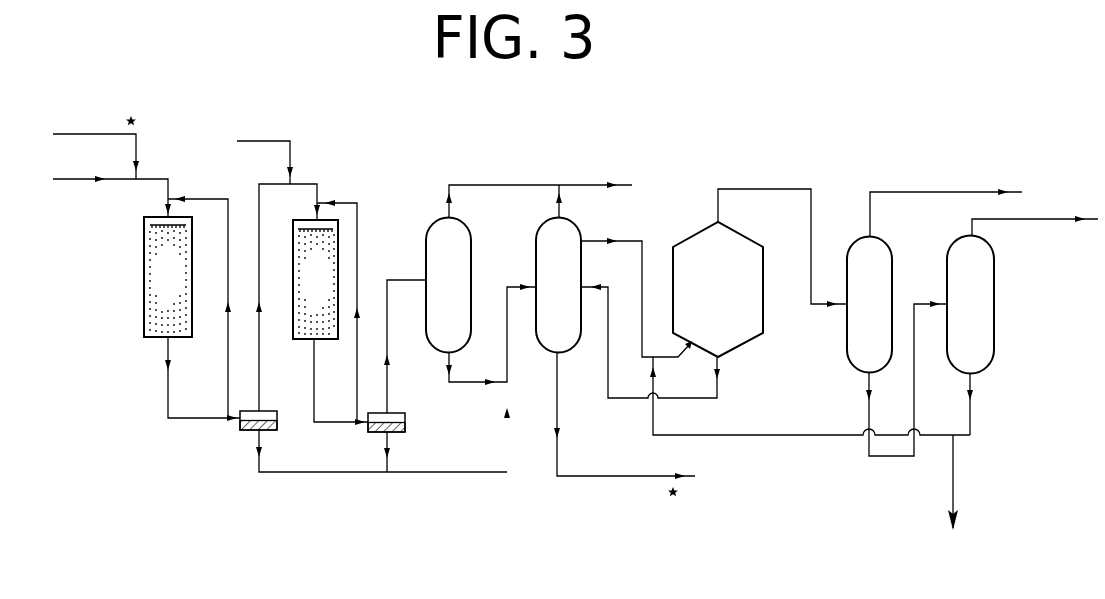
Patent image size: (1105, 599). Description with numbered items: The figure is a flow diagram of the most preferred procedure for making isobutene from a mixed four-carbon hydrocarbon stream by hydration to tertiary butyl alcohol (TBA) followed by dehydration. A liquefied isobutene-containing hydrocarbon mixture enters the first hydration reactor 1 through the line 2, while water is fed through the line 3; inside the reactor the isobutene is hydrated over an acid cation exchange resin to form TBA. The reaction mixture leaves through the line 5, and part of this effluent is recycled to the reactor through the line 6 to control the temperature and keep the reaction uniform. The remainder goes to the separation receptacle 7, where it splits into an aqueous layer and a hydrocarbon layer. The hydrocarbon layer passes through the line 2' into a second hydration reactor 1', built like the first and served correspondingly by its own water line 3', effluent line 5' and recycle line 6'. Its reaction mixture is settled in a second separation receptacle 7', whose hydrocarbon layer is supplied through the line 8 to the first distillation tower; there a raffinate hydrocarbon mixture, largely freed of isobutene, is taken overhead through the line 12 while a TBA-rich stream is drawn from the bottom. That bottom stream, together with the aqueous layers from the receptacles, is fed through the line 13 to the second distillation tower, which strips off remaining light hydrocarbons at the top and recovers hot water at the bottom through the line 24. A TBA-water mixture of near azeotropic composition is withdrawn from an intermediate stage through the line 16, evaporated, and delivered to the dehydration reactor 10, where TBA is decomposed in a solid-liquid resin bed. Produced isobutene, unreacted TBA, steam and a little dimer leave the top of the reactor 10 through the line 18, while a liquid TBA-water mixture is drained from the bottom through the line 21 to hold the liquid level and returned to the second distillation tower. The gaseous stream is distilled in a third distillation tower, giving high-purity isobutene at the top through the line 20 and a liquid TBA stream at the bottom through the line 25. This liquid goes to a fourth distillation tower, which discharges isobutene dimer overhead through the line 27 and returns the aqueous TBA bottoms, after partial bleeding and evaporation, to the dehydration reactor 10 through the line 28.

The first reactor 1 is at (148, 277).
The first reactor 1' is at (340, 273).
The line 2 is at (112, 199).
The line 2' is at (273, 287).
The line 3 is at (96, 138).
The feed line (catalyst/additive) to second reactor 3' is at (265, 142).
The line 5 is at (184, 379).
The second reactor effluent line 5' is at (324, 382).
The line 6 is at (199, 307).
The recycle line 6' is at (338, 311).
The separation receptacle 7 is at (363, 441).
The separation receptacle 7' is at (402, 442).
The line 8 is at (387, 375).
The second reactor 10 is at (748, 340).
The line 12 is at (539, 175).
The line 13 is at (507, 332).
The line 16 is at (642, 269).
The line 18 is at (758, 189).
The line 20 is at (926, 192).
The line 21 is at (690, 398).
The bottoms product line 24 is at (598, 476).
The line 25 is at (914, 366).
The line 27 is at (1016, 221).
The line 28 is at (798, 435).